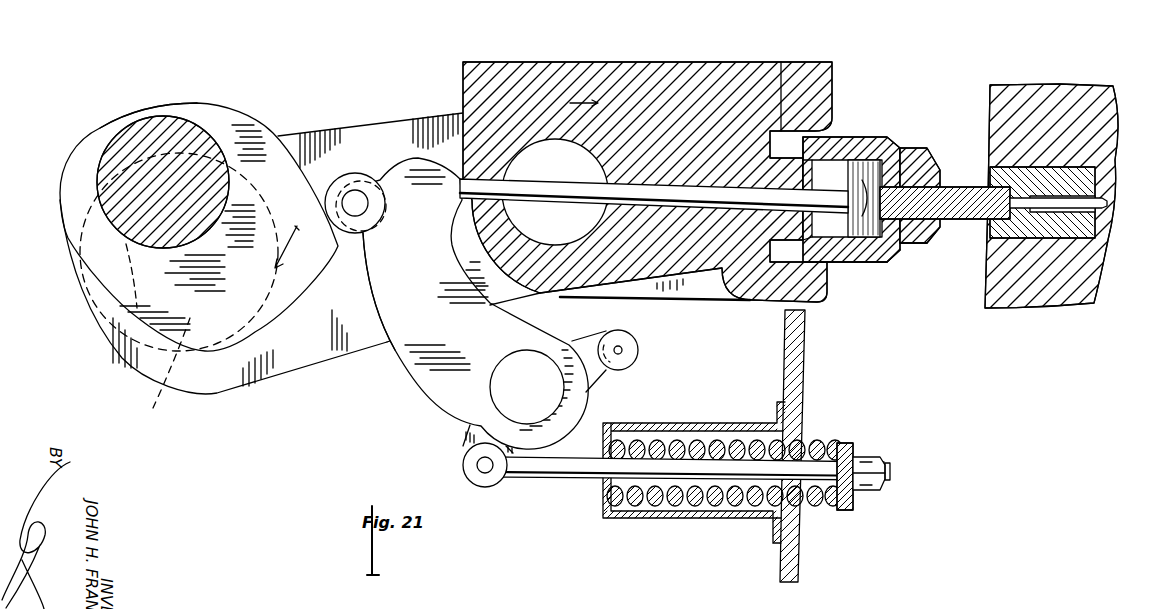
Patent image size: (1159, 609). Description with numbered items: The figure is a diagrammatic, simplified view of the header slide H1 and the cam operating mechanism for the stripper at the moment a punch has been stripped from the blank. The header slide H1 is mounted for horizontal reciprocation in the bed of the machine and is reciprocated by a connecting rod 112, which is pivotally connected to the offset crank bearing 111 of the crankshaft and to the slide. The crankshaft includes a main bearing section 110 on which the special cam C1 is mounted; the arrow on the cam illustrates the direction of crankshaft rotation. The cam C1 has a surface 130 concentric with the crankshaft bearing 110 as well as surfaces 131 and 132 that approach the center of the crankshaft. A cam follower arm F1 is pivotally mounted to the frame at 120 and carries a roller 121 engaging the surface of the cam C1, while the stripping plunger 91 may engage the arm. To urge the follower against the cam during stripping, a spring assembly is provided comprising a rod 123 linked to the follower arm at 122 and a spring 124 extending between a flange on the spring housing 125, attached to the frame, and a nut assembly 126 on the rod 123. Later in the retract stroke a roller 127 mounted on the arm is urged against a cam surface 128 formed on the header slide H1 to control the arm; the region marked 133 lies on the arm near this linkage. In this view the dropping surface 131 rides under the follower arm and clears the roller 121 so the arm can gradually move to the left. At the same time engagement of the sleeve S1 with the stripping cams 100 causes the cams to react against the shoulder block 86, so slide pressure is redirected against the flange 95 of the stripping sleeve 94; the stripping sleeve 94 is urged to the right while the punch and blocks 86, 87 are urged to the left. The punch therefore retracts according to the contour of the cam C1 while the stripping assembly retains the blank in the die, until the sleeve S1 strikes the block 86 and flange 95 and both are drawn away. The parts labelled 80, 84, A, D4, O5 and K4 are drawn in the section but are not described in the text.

The main bearing section 110 is at (107, 158).
The cam surface 132 is at (210, 93).
The cam surface 130 is at (282, 305).
The offset crank bearing 111 is at (163, 366).
The connecting rod 112 is at (380, 120).
The dropping surface 131 is at (320, 189).
The roller 121 is at (360, 236).
The lever wedge 133 is at (468, 268).
The pivot 120 is at (543, 360).
The roller 127 is at (640, 352).
The link connection 122 is at (462, 437).
The rod 123 is at (556, 481).
The spring 124 is at (698, 402).
The spring housing 125 is at (693, 520).
The nut assembly 126 is at (853, 498).
The cam surface 128 is at (670, 290).
The stripping plunger 91 is at (588, 182).
The flange 84 is at (820, 131).
The cap 80 is at (860, 137).
The block 87 is at (852, 222).
The shoulder block 86 is at (881, 262).
The stripping cams 100 is at (896, 263).
The flange 95 is at (915, 250).
The stripping sleeve 94 is at (944, 216).
The cam C1 is at (58, 190).
The cam follower arm F1 is at (452, 172).
The header slide H1 is at (642, 56).
The housing section A is at (788, 66).
The sleeve S1 is at (922, 146).
The wall D4 is at (1068, 170).
The sleeve O5 is at (1002, 195).
The pin K4 is at (1106, 205).